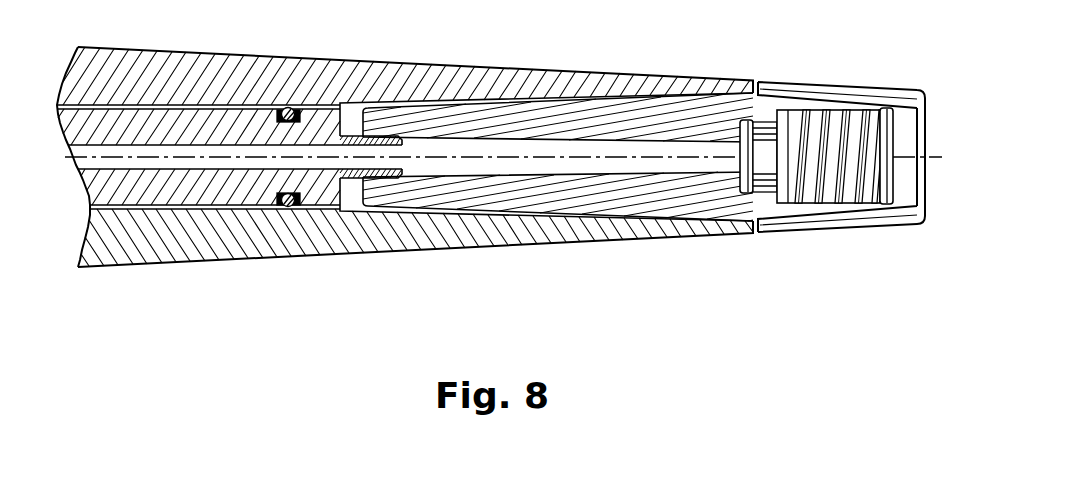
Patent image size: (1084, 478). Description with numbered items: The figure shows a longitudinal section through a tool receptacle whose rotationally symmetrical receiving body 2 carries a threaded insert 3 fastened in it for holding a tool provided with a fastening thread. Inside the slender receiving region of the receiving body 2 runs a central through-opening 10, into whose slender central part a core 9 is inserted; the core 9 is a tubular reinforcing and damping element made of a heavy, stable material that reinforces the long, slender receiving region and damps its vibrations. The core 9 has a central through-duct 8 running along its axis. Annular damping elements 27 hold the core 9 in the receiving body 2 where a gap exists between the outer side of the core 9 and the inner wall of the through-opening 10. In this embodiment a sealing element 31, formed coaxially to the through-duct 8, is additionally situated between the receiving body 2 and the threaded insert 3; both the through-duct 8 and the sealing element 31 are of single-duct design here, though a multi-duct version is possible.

The receiving body 2 is at (244, 75).
The threaded insert 3 is at (672, 120).
The through-duct 8 is at (259, 160).
The core 9 is at (316, 190).
The central through-opening 10 is at (207, 105).
The damping elements 27 is at (283, 108).
The sealing element 31 is at (392, 173).